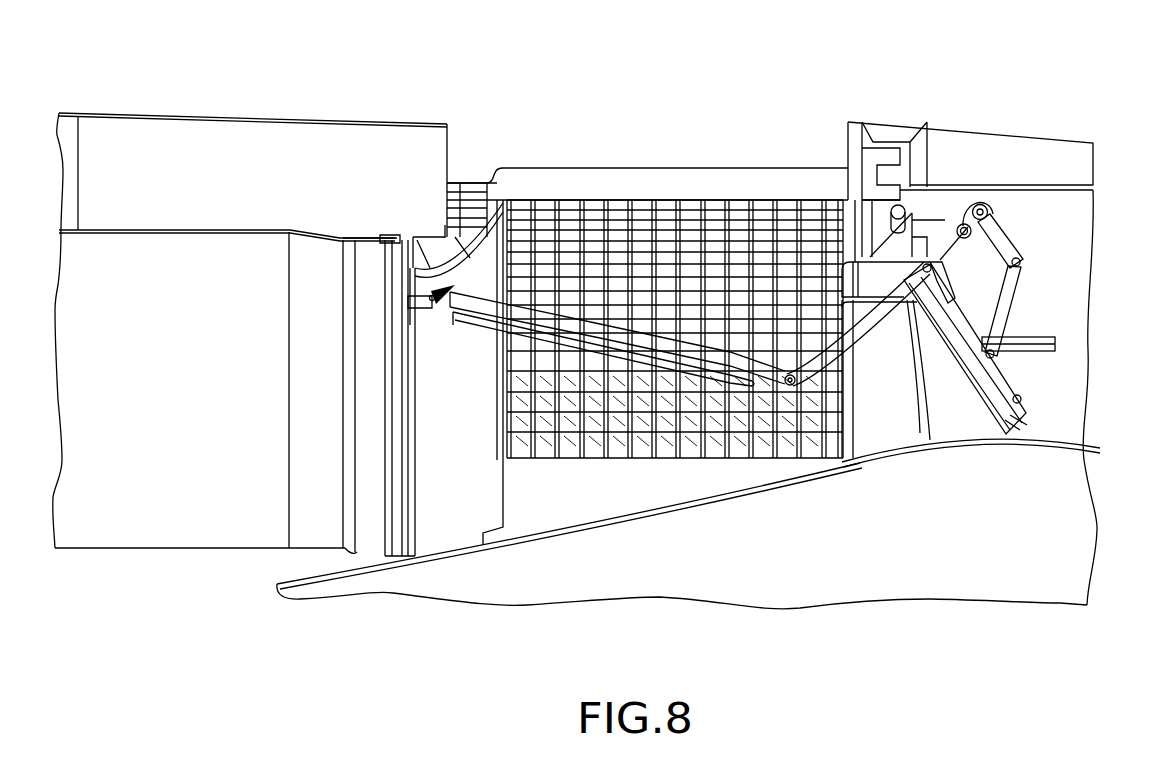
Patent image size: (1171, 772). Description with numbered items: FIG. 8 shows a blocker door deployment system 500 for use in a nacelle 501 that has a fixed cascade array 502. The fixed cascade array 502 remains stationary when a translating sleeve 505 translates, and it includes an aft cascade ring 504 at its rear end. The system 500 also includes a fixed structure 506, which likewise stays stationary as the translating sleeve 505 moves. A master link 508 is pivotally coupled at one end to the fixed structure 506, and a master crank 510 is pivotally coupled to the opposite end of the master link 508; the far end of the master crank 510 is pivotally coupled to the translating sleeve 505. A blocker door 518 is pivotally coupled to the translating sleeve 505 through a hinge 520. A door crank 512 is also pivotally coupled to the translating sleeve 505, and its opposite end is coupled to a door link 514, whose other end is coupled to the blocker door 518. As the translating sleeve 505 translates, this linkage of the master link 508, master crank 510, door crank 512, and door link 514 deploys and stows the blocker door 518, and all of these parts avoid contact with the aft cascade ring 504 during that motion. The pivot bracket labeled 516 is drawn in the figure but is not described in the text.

The blocker door deployment system 500 is at (720, 138).
The nacelle 501 is at (160, 84).
The fixed cascade array 502 is at (545, 168).
The aft cascade ring 504 is at (890, 158).
The translating sleeve 505 is at (1003, 158).
The fixed structure 506 is at (412, 303).
The master link 508 is at (631, 347).
The master crank 510 is at (847, 337).
The door crank 512 is at (1002, 240).
The door link 514 is at (1002, 308).
The pivot bracket 516 is at (985, 202).
The blocker door 518 is at (1013, 415).
The hinge 520 is at (960, 282).